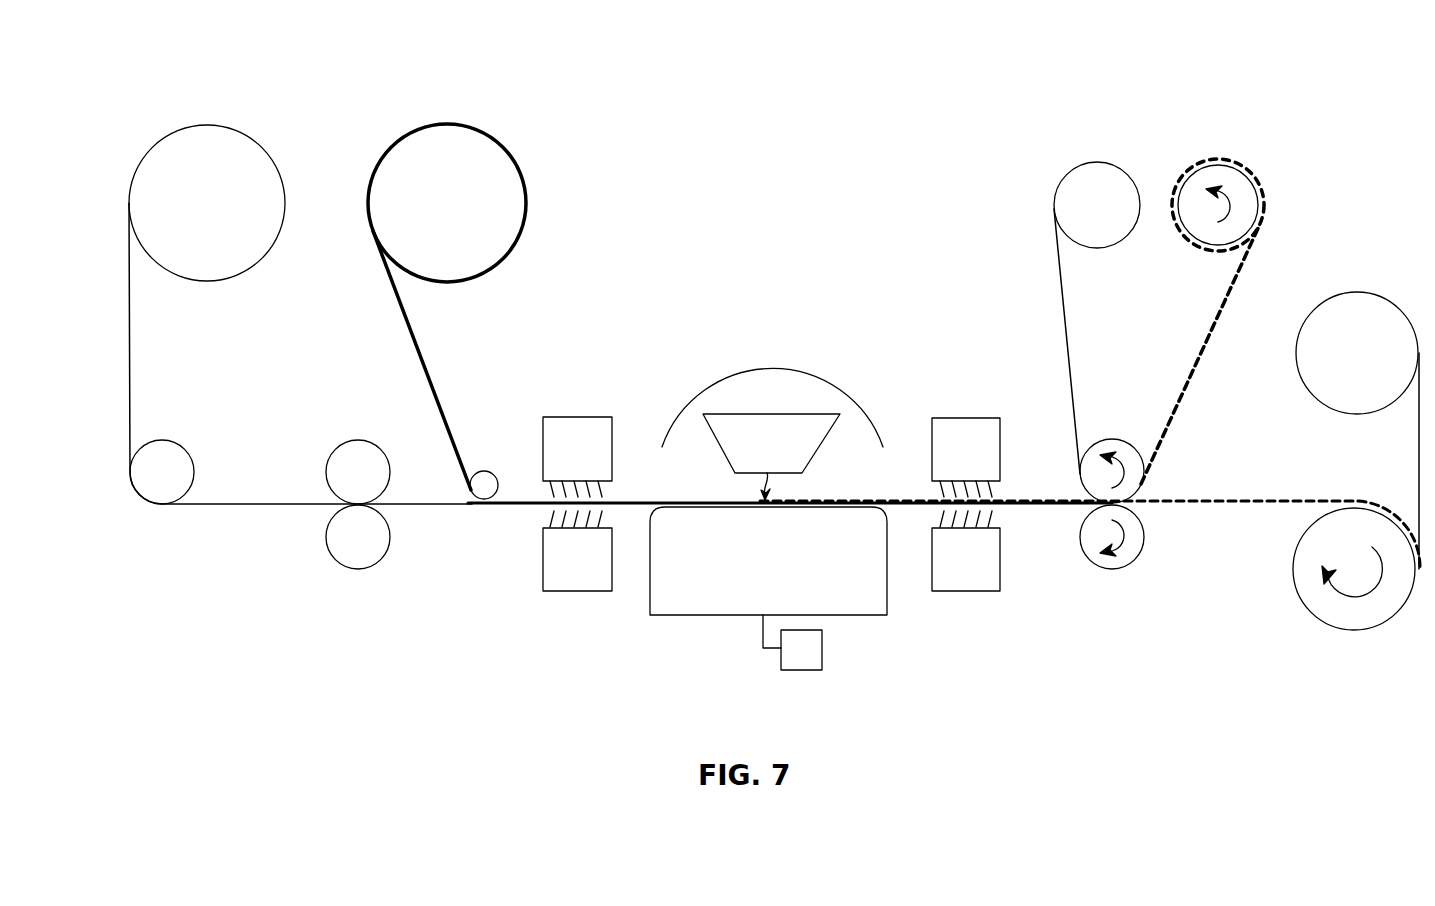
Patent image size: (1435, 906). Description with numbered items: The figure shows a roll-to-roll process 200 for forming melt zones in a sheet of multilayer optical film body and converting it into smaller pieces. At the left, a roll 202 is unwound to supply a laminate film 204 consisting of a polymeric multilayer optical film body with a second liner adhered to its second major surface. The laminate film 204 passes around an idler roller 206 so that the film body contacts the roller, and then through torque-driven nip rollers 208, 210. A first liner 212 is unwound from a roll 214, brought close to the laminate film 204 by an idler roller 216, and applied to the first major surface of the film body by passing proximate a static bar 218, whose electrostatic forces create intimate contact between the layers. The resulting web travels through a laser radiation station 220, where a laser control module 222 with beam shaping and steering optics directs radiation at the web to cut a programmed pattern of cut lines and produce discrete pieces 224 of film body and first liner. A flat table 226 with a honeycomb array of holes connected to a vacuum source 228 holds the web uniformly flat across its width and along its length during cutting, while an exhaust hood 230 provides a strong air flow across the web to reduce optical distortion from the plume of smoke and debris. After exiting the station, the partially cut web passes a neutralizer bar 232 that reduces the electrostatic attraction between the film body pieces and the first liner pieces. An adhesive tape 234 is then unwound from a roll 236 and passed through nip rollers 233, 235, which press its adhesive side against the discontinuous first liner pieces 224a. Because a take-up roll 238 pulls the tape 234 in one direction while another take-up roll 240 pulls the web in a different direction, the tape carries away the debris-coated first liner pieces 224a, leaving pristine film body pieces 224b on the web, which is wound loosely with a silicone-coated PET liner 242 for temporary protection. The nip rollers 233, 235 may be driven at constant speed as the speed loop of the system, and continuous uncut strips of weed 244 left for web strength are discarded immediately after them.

The roll-to-roll process 200 is at (782, 158).
The roll 202 is at (232, 222).
The laminate film 204 is at (128, 360).
The idler roller 206 is at (170, 440).
The nip roller 208 is at (358, 440).
The nip roller 210 is at (358, 570).
The first liner 212 is at (420, 352).
The roll 214 is at (472, 222).
The idler roller 216 is at (484, 471).
The static bar 218 is at (602, 462).
The laser radiation station 220 is at (803, 348).
The laser control module 222 is at (797, 462).
The pieces 224 is at (820, 500).
The first liner pieces 224a is at (1186, 394).
The multilayer optical film body pieces 224b is at (1200, 502).
The flat table 226 is at (800, 570).
The vacuum source 228 is at (810, 650).
The exhaust hood 230 is at (757, 369).
The neutralizer bar 232 is at (992, 464).
The nip roller 233 is at (1118, 437).
The adhesive tape 234 is at (1058, 337).
The nip roller 235 is at (1112, 570).
The roll 236 is at (1122, 217).
The take-up roll 238 is at (1221, 172).
The take-up roll 240 is at (1350, 632).
The silicone-coated PET liner 242 is at (1417, 440).
The weed 244 is at (1173, 560).